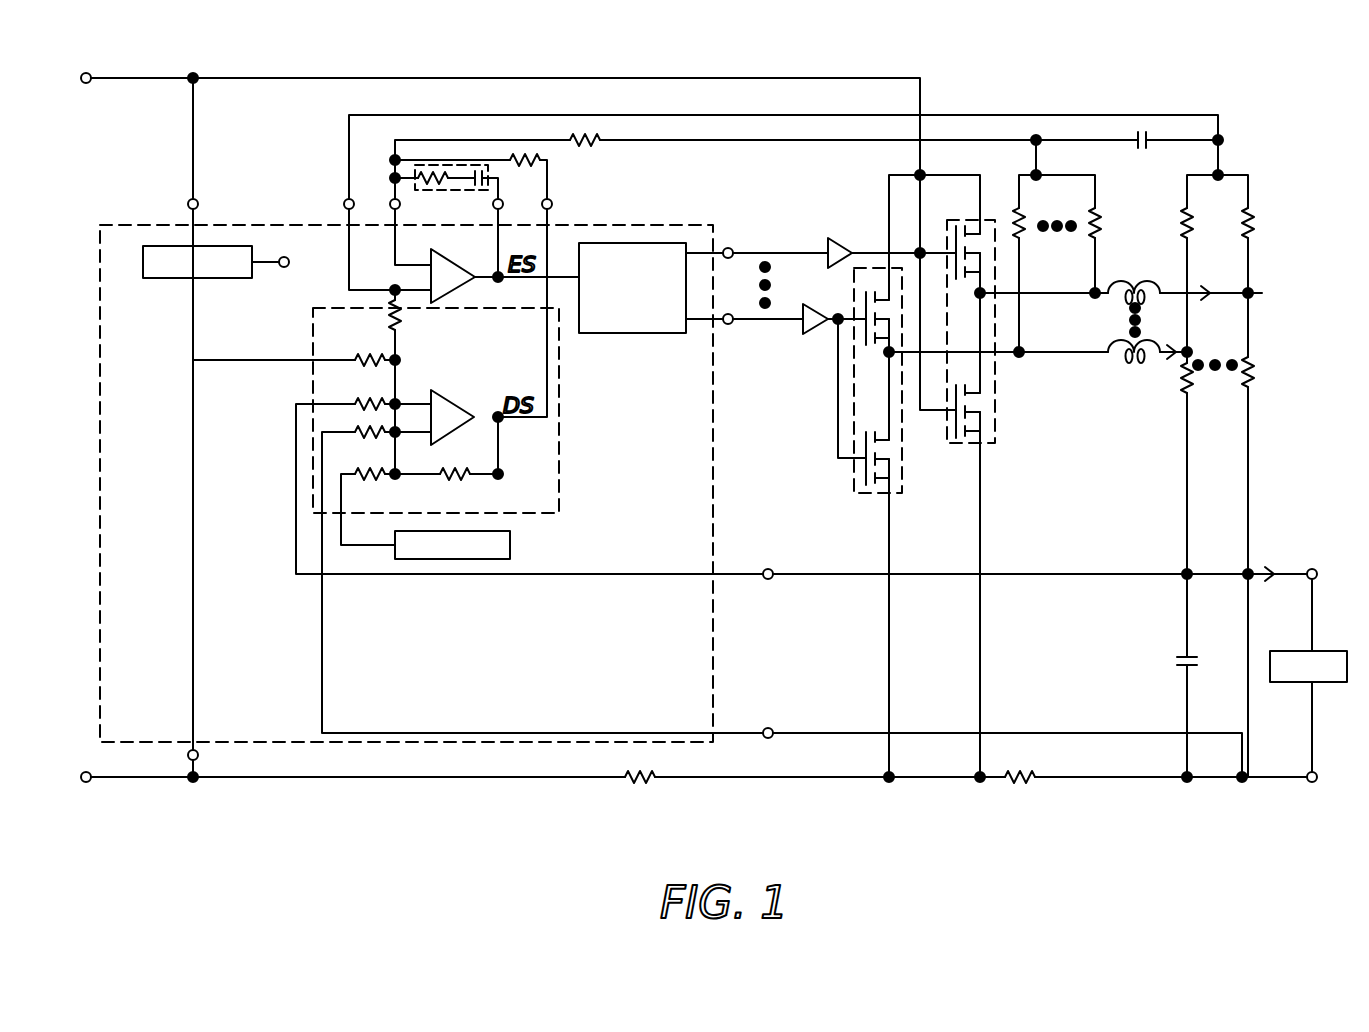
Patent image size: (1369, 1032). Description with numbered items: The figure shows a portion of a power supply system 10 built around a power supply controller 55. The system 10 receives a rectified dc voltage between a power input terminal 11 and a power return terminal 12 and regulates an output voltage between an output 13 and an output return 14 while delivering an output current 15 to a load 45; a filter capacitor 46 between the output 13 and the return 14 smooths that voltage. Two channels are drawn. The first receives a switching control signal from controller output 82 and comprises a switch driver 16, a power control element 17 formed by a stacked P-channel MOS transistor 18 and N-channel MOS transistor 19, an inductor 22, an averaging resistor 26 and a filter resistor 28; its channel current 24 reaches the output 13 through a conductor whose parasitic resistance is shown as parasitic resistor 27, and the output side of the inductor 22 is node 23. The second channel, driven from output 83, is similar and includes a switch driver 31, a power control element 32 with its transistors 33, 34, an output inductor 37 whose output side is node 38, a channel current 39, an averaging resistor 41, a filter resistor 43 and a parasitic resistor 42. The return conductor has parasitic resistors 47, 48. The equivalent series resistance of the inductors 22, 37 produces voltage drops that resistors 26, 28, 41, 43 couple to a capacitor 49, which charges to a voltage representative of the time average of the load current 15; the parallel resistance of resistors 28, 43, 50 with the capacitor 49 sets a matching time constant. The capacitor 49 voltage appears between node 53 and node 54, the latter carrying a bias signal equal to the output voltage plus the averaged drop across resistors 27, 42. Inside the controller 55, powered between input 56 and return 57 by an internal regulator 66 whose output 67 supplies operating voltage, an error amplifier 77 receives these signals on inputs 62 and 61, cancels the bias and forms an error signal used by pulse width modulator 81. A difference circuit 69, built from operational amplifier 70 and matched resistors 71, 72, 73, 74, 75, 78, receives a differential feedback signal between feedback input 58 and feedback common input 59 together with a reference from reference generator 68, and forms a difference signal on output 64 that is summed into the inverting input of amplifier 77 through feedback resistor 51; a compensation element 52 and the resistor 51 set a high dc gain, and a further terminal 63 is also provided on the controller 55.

The power supply system 10 is at (742, 852).
The power input terminal 11 is at (92, 73).
The power return terminal 12 is at (84, 770).
The output 13 is at (1312, 568).
The output return 14 is at (1313, 783).
The output current 15 is at (1271, 568).
The switch driver 16 is at (840, 236).
The power control element 17 is at (962, 218).
The P-channel MOS transistor 18 is at (978, 268).
The N-channel MOS transistor 19 is at (986, 400).
The inductor 22 is at (1120, 282).
The node 23 is at (1254, 293).
The channel current 24 is at (1205, 290).
The averaging resistor 26 is at (1252, 215).
The parasitic resistor 27 is at (1254, 370).
The filter resistor 28 is at (1100, 218).
The switch driver 31 is at (816, 336).
The power control element 32 is at (853, 492).
The transistor 33 is at (872, 296).
The transistor 34 is at (880, 460).
The output inductor 37 is at (1128, 362).
The node 38 is at (1192, 350).
The channel current 39 is at (1172, 346).
The averaging resistor 41 is at (1185, 215).
The parasitic resistor 42 is at (1180, 396).
The filter resistor 43 is at (1022, 228).
The load 45 is at (1297, 650).
The filter capacitor 46 is at (1198, 660).
The parasitic resistor 47 is at (1010, 783).
The parasitic resistor 48 is at (637, 783).
The capacitor 49 is at (1145, 130).
The resistor 50 is at (583, 146).
The feedback resistor 51 is at (523, 166).
The compensation element 52 is at (430, 192).
The node 53 is at (1035, 140).
The node 54 is at (1222, 138).
The power supply controller 55 is at (717, 665).
The power input 56 is at (199, 204).
The power return 57 is at (199, 755).
The feedback input 58 is at (771, 569).
The feedback common input 59 is at (771, 728).
The input 61 is at (344, 204).
The input 62 is at (389, 204).
The terminal 63 is at (502, 208).
The output 64 is at (552, 204).
The internal regulator 66 is at (170, 280).
The output 67 is at (286, 268).
The reference generator 68 is at (510, 551).
The difference circuit 69 is at (560, 472).
The operational amplifier 70 is at (458, 400).
The resistor 71 is at (365, 428).
The resistor 72 is at (360, 480).
The resistor 73 is at (444, 480).
The resistor 74 is at (380, 397).
The resistor 75 is at (380, 353).
The error amplifier 77 is at (458, 293).
The resistor 78 is at (401, 316).
The pulse width modulator 81 is at (637, 333).
The output 82 is at (732, 248).
The output 83 is at (732, 314).